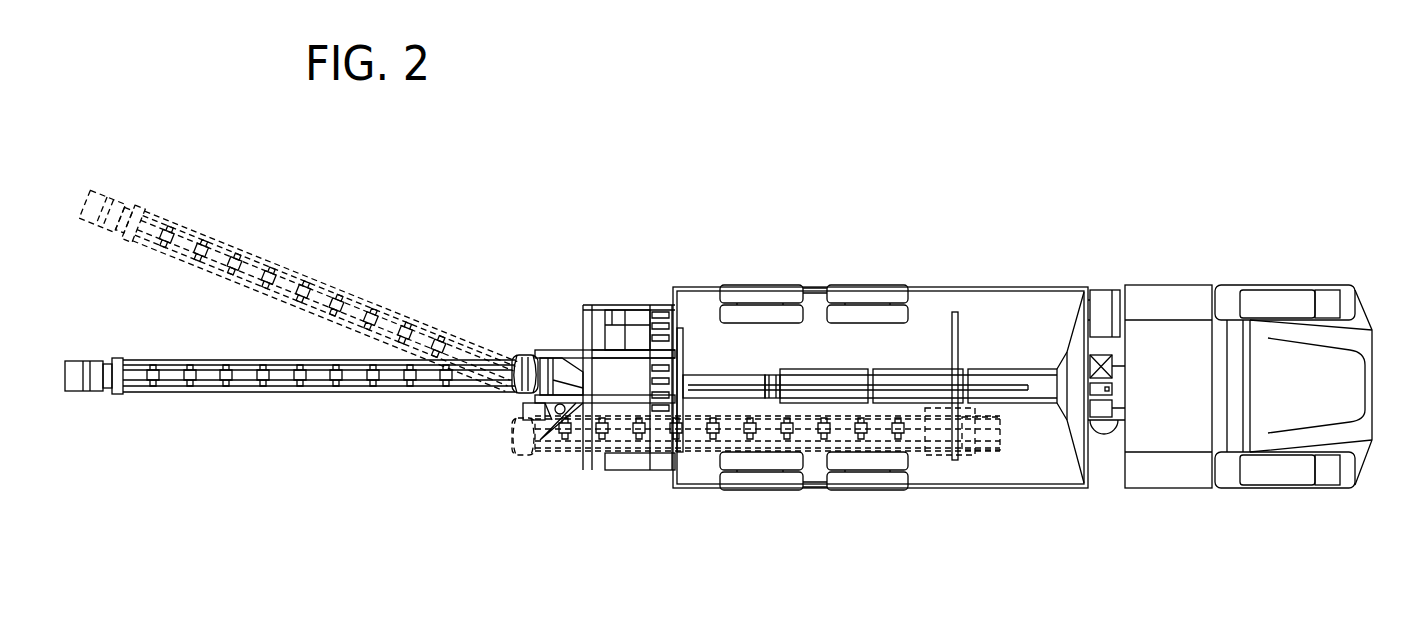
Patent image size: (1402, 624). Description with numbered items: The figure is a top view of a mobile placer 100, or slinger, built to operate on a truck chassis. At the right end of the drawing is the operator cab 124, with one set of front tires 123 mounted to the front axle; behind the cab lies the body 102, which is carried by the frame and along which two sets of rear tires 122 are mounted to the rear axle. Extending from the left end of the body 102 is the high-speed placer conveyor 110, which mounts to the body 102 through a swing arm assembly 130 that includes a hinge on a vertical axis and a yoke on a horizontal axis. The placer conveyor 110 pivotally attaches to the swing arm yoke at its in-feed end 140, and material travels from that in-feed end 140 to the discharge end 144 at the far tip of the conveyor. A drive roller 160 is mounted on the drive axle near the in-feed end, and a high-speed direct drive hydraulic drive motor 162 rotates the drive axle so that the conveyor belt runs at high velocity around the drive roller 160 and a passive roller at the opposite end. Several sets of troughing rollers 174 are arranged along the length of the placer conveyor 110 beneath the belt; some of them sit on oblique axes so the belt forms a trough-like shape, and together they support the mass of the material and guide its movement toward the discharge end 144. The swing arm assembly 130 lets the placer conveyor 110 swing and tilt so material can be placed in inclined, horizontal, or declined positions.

The mobile placer 100 is at (798, 204).
The body 102 is at (1013, 313).
The placer conveyor 110 is at (198, 341).
The rear tires 122 is at (762, 285).
The front tires 123 is at (1286, 288).
The operator cab 124 is at (1225, 266).
The swing arm assembly 130 is at (571, 358).
The in-feed end 140 is at (480, 392).
The discharge end 144 is at (107, 343).
The drive roller 160 is at (508, 358).
The drive motor 162 is at (512, 350).
The troughing rollers 174 is at (299, 345).